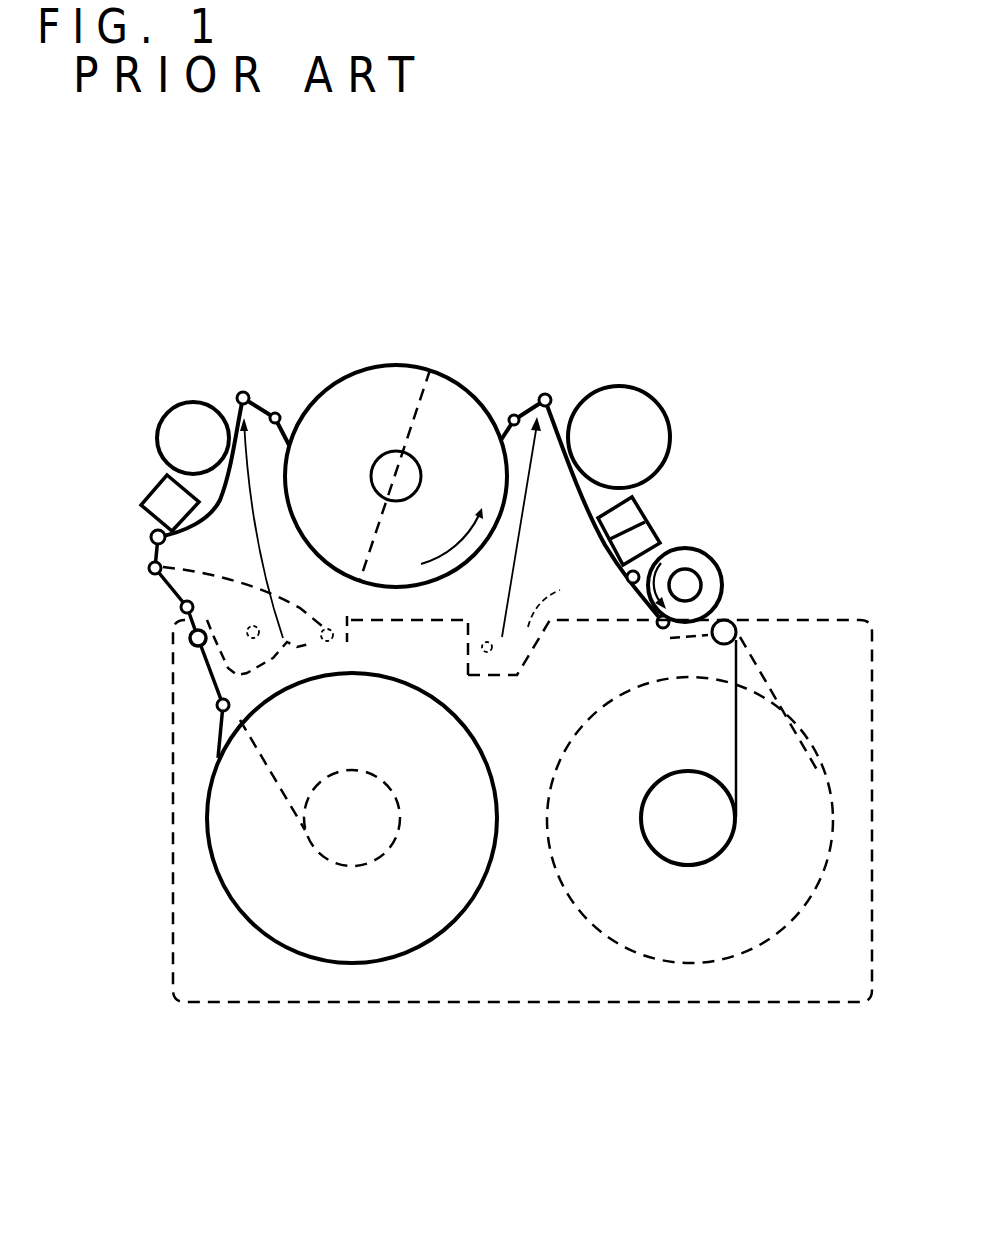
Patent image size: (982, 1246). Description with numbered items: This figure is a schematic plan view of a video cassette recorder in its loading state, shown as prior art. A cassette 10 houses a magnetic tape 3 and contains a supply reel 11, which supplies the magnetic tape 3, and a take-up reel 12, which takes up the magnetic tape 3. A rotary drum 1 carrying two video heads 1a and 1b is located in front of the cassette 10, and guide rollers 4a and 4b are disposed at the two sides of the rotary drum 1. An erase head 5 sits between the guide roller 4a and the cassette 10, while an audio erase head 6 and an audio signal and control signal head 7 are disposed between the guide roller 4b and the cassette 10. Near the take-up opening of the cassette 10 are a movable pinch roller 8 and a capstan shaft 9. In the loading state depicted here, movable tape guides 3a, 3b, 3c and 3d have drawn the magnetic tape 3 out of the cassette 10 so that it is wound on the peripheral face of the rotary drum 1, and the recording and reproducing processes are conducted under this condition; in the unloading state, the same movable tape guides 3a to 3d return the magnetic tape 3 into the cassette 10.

The rotary drum 1 is at (358, 366).
The video head 1a is at (433, 370).
The video head 1b is at (345, 562).
The magnetic tape 3 is at (221, 497).
The movable tape guide 3a is at (240, 392).
The movable tape guide 3b is at (278, 413).
The movable tape guide 3c is at (546, 394).
The movable tape guide 3d is at (506, 421).
The guide roller 4a is at (167, 413).
The guide roller 4b is at (627, 386).
The erase head 5 is at (140, 496).
The audio erase head 6 is at (643, 507).
The audio signal and control signal head 7 is at (658, 532).
The movable pinch roller 8 is at (719, 568).
The capstan shaft 9 is at (657, 624).
The cassette 10 is at (173, 922).
The supply reel 11 is at (357, 963).
The take-up reel 12 is at (683, 962).